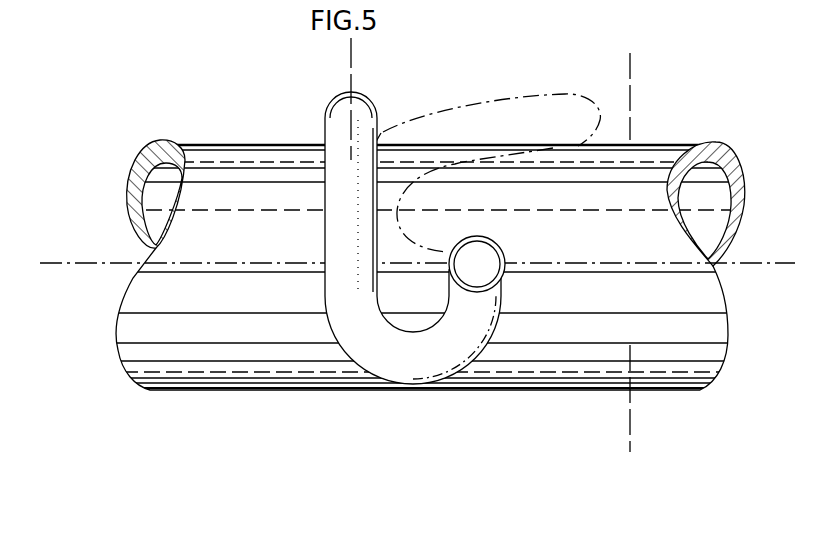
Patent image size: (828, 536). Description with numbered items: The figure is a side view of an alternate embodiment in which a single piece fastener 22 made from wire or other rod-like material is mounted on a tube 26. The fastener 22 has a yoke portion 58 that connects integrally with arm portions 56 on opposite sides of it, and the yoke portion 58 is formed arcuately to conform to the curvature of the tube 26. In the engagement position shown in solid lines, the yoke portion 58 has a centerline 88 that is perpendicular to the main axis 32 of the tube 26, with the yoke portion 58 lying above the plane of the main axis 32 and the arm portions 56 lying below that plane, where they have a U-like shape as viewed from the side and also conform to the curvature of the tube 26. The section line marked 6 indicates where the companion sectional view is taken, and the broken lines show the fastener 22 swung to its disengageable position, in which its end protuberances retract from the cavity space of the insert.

The fastener 22 is at (295, 100).
The tube 26 is at (247, 145).
The main axis 32 is at (75, 263).
The arm portions 56 is at (384, 384).
The yoke portion 58 is at (378, 105).
The centerline 88 is at (352, 77).
The section line 6- 6 is at (636, 67).